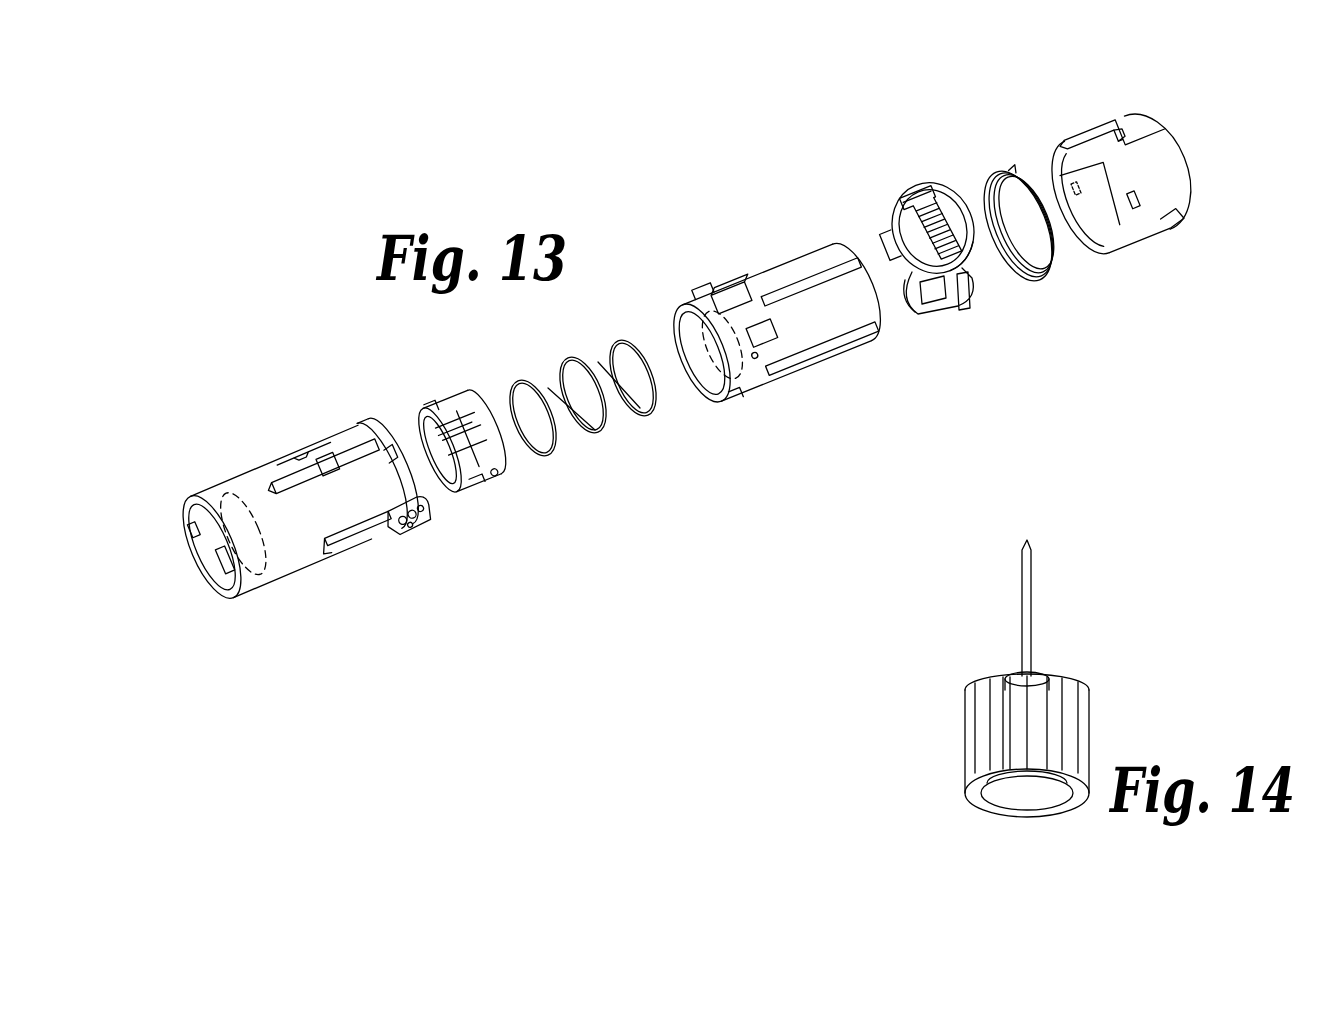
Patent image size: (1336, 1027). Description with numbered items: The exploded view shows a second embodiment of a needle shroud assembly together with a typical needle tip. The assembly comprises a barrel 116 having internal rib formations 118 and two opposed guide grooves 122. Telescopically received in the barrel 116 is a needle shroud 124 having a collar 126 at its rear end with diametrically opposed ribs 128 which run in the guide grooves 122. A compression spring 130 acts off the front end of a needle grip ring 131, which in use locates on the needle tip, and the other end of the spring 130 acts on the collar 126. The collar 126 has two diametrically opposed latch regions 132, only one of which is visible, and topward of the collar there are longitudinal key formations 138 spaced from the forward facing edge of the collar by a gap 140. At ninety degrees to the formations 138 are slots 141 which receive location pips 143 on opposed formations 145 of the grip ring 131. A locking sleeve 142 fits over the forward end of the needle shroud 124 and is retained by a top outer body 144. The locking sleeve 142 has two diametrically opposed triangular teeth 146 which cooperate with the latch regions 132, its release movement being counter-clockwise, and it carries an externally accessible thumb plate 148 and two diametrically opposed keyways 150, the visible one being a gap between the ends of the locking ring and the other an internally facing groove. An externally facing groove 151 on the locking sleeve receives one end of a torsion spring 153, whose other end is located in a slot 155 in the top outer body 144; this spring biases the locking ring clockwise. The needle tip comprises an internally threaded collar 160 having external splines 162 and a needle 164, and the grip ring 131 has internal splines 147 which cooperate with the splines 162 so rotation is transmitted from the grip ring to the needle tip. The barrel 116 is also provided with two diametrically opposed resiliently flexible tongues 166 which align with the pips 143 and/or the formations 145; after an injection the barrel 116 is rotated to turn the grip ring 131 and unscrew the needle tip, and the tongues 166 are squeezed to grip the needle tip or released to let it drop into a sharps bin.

In FIG. 13, the barrel 116 is at (287, 563).
In FIG. 13, the internal rib formations 118 is at (227, 557).
In FIG. 13, the guide grooves 122 is at (390, 440).
In FIG. 13, the needle shroud 124 is at (728, 203).
In FIG. 13, the collar 126 is at (737, 387).
In FIG. 13, the ribs 128 is at (718, 310).
In FIG. 13, the compression spring 130 is at (563, 447).
In FIG. 13, the needle grip ring 131 is at (462, 427).
In FIG. 13, the latch regions 132 is at (763, 372).
In FIG. 13, the longitudinal key formations 138 is at (813, 277).
In FIG. 13, the gap 140 is at (750, 307).
In FIG. 13, the slots 141 is at (847, 345).
In FIG. 13, the locking sleeve 142 is at (982, 325).
In FIG. 13, the location pips 143 is at (497, 477).
In FIG. 13, the top outer body 144 is at (1142, 118).
In FIG. 13, the opposed formations 145 is at (435, 415).
In FIG. 13, the triangular teeth 146 is at (897, 233).
In FIG. 13, the internal splines 147 is at (443, 437).
In FIG. 13, the thumb plate 148 is at (933, 200).
In FIG. 13, the keyways 150 is at (913, 277).
In FIG. 13, the externally facing groove 151 is at (967, 265).
In FIG. 13, the torsion spring 153 is at (1017, 167).
In FIG. 13, the slot 155 is at (1160, 137).
In FIG. 14, the internally threaded collar 160 is at (1087, 730).
In FIG. 14, the external splines 162 is at (1063, 710).
In FIG. 14, the needle 164 is at (1028, 620).
In FIG. 13, the resiliently flexible tongues 166 is at (417, 545).